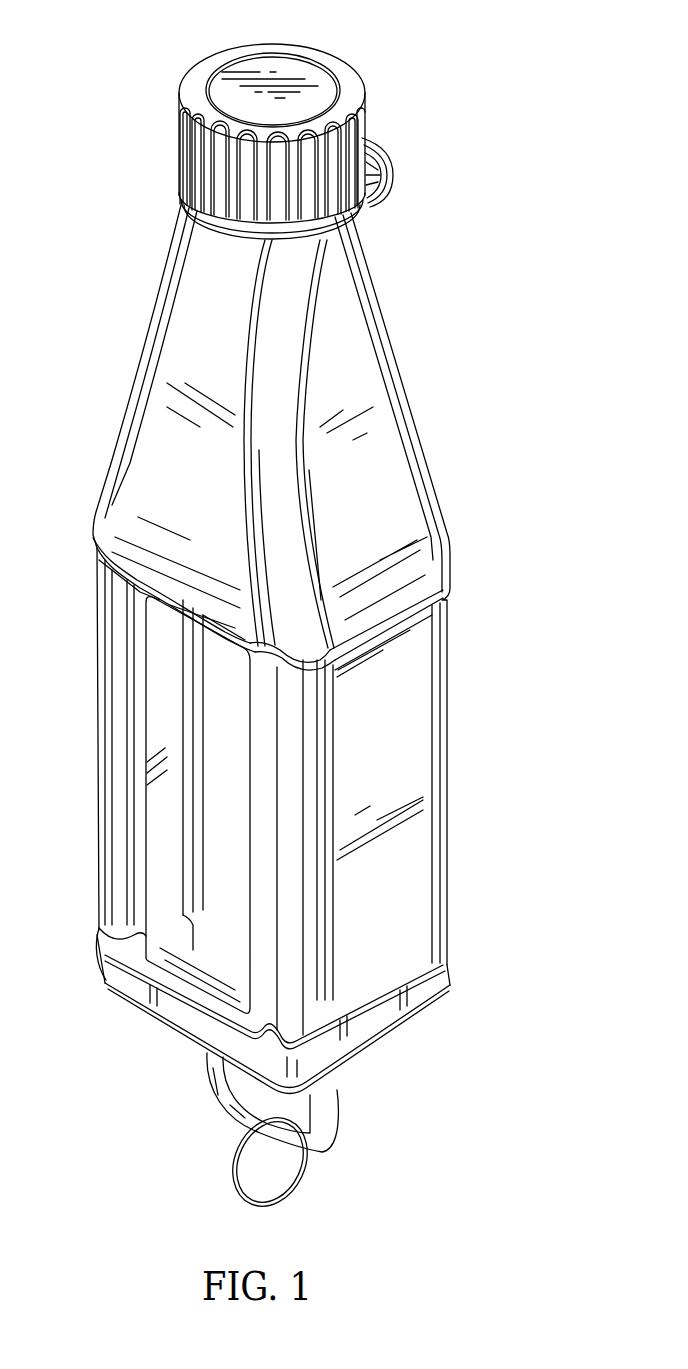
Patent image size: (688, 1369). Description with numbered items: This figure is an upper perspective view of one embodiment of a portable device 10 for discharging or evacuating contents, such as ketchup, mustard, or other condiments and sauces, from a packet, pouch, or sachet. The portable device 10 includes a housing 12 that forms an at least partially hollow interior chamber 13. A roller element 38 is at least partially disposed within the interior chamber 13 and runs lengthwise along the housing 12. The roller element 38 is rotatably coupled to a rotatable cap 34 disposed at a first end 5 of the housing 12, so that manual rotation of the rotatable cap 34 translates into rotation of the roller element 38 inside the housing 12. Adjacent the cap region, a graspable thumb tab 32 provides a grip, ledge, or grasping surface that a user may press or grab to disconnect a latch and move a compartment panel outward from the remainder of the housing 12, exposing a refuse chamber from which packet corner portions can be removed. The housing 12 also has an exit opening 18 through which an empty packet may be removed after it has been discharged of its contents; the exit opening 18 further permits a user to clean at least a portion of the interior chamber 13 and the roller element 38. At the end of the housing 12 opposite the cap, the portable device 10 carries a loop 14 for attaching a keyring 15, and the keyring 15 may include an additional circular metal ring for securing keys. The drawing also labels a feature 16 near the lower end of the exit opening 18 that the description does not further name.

The portable device 10 is at (430, 73).
The first end 5 is at (290, 70).
The rotatable cap 34 is at (207, 68).
The graspable thumb tab 32 is at (392, 190).
The housing 12 is at (380, 418).
The exit opening 18 is at (131, 657).
The interior chamber 13 is at (140, 806).
The roller element 38 is at (222, 868).
The lower handle junction 16 is at (152, 939).
The keyring 15 is at (170, 1047).
The loop 14 is at (335, 1152).